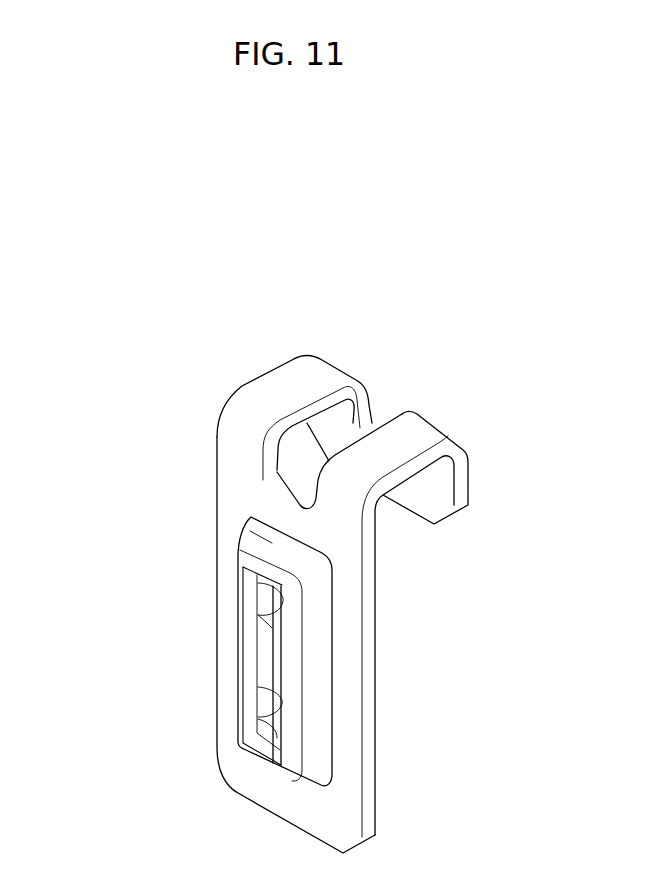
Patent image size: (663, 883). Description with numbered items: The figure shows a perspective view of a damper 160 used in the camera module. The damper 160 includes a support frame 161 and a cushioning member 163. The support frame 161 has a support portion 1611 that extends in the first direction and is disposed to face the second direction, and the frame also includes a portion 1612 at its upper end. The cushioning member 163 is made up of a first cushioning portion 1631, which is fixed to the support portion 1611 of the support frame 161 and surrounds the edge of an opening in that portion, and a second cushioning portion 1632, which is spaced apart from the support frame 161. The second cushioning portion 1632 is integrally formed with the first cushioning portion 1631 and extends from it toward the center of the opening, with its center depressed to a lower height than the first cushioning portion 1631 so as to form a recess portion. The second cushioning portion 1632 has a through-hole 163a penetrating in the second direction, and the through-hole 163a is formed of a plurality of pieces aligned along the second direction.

The damper 160 is at (210, 392).
The support frame 161 is at (483, 623).
The support portion 1611 is at (461, 673).
The hook 1612 is at (400, 448).
The cushioning member 163 is at (267, 651).
The first cushioning portion 1631 is at (242, 526).
The second cushioning portion 1632 is at (280, 661).
The through-hole 163a is at (282, 597).